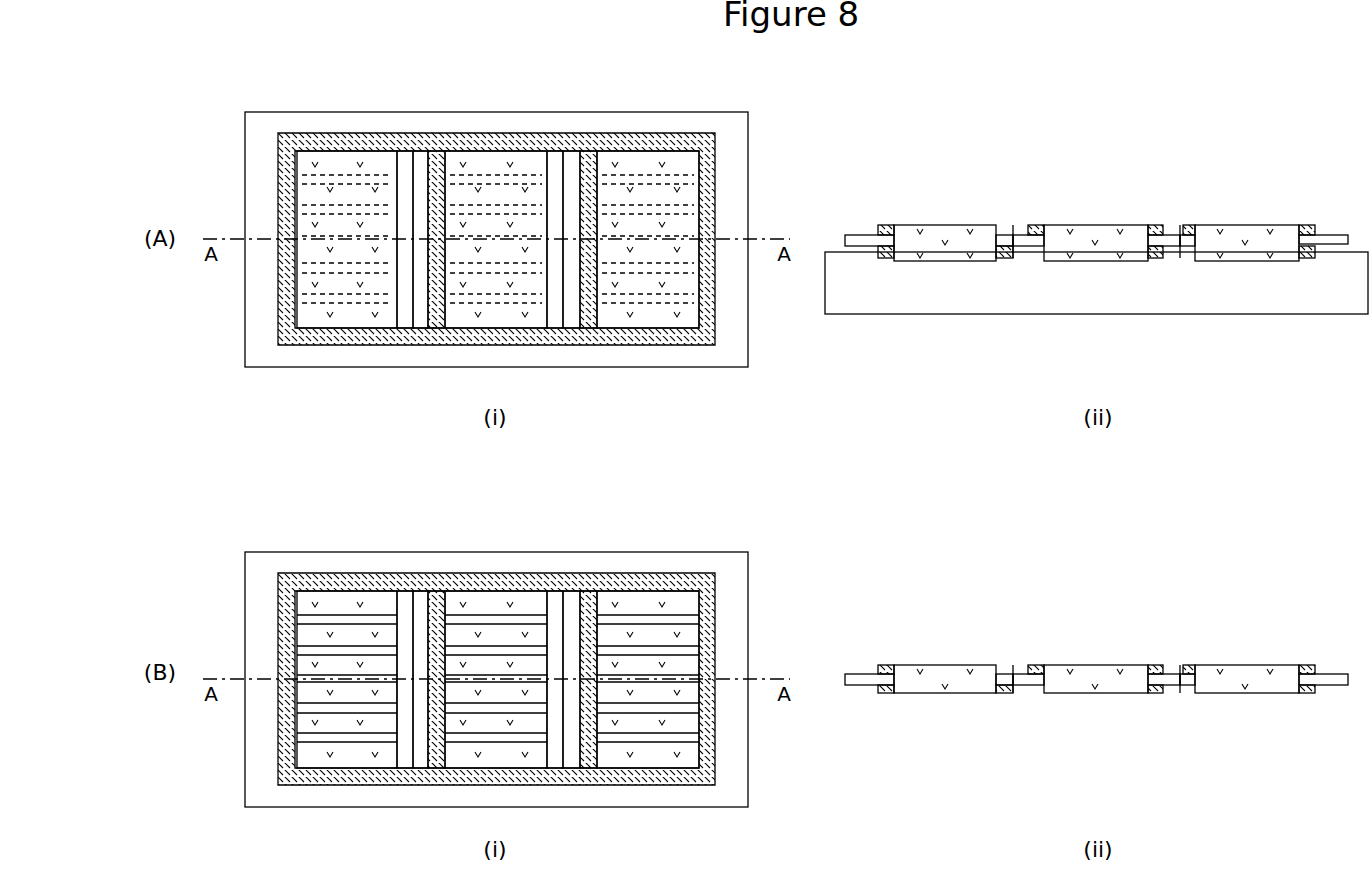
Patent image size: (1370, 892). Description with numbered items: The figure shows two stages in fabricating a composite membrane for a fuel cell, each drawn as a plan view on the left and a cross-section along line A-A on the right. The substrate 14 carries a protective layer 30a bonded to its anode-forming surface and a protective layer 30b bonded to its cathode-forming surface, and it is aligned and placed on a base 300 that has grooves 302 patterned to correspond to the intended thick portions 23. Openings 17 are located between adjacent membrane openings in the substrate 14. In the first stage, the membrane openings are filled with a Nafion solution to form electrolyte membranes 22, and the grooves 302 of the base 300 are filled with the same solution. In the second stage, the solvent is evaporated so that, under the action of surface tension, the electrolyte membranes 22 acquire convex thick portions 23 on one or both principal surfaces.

The substrate 14 is at (405, 153).
The opening 17 is at (420, 153).
The electrolyte membrane 22 is at (345, 158).
The thick portion 23 is at (690, 677).
The protective layer 30a is at (705, 140).
The protective layer 30b is at (886, 258).
The base 300 is at (1215, 298).
The groove 302 is at (690, 236).